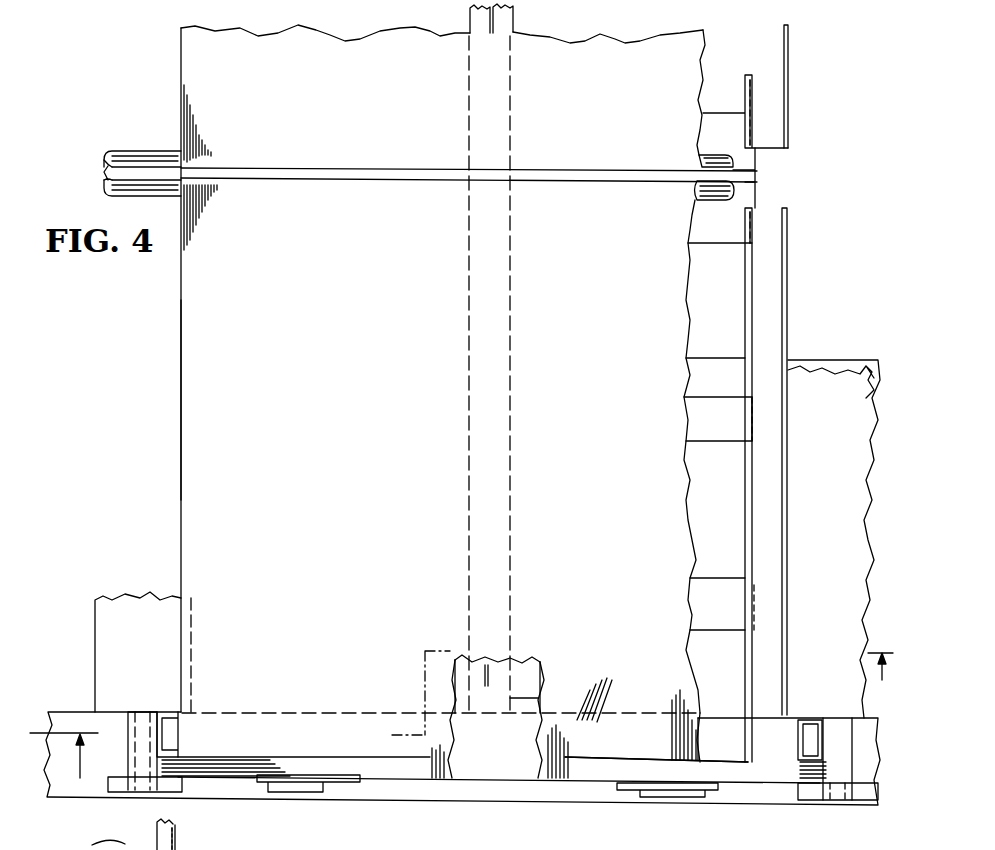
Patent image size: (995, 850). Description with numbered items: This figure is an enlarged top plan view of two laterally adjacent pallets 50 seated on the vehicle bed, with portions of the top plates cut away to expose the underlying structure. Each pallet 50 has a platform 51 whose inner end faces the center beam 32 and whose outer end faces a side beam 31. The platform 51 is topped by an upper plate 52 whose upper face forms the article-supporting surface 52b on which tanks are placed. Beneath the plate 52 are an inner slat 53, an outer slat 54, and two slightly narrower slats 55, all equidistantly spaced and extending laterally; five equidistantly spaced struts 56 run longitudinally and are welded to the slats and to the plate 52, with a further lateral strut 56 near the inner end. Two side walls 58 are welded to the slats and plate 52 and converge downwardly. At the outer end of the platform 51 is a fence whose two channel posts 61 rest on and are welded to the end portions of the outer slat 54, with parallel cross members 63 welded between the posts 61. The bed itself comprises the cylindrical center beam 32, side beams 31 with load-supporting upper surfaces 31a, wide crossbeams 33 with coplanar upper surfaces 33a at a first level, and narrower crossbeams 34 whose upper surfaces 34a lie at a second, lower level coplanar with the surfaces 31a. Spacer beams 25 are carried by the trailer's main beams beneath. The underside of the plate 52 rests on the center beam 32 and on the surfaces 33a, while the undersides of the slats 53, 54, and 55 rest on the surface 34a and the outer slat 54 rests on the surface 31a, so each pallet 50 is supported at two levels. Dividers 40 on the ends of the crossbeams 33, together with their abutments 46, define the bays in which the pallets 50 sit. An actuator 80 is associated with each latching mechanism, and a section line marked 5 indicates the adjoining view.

The spacer beam 25 is at (826, 370).
The side beam 31 is at (70, 790).
The load-supporting upper surface 31a is at (520, 756).
The center beam 32 is at (172, 157).
The crossbeam 33 is at (105, 628).
The load-supporting upper surface 33a is at (172, 666).
The crossbeam 34 is at (538, 698).
The upper surface 34a is at (480, 702).
The divider 40 is at (143, 722).
The abutment 46 is at (120, 786).
The section line 5 is at (453, 715).
The pallet 50 is at (181, 55).
The platform 51 is at (181, 492).
The upper plate 52 is at (181, 86).
The article-supporting surface 52b is at (375, 107).
The inner slat 53 is at (745, 196).
The outer slat 54 is at (720, 740).
The slat 55 is at (720, 415).
The strut 56 is at (518, 667).
The side wall 58 is at (775, 302).
The post 61 is at (178, 735).
The cross member 63 is at (405, 768).
The actuator 80 is at (302, 793).